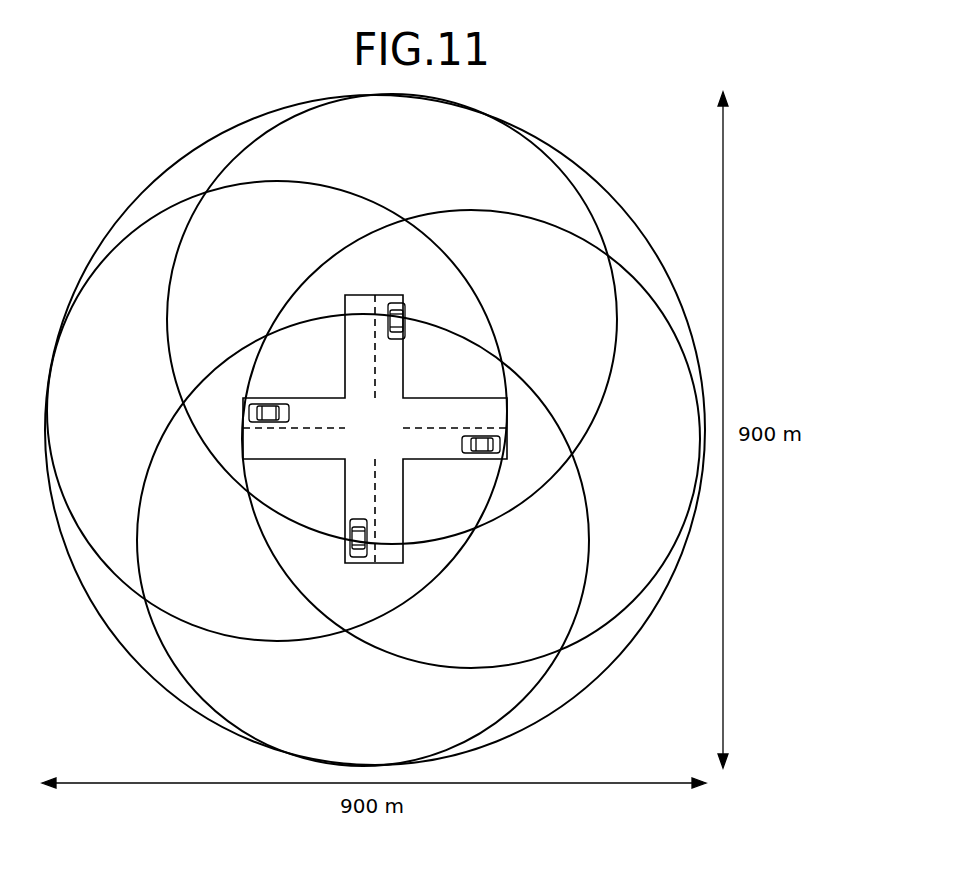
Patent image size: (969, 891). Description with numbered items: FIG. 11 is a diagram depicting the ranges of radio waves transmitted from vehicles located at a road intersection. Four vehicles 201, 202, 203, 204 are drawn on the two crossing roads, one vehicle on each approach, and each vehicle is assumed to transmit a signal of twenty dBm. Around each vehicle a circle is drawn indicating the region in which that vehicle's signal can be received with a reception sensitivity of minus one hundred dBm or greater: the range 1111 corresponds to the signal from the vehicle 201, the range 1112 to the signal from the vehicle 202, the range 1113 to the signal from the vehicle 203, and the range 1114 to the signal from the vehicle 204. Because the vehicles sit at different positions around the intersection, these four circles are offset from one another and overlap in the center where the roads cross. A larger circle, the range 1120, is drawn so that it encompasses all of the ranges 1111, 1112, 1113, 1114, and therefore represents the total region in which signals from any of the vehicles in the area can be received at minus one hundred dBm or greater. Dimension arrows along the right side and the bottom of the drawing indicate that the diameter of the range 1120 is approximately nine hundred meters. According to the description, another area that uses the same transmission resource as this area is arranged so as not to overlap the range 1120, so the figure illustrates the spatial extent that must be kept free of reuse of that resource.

The range 1120 is at (594, 146).
The range 1111 is at (50, 437).
The range 1112 is at (169, 297).
The range 1113 is at (425, 664).
The range 1114 is at (210, 705).
The vehicle 201 is at (281, 403).
The vehicle 202 is at (406, 337).
The vehicle 203 is at (469, 455).
The vehicle 204 is at (349, 527).